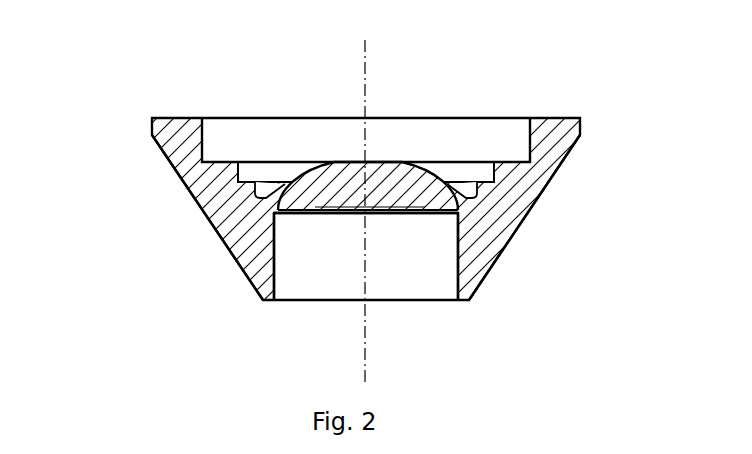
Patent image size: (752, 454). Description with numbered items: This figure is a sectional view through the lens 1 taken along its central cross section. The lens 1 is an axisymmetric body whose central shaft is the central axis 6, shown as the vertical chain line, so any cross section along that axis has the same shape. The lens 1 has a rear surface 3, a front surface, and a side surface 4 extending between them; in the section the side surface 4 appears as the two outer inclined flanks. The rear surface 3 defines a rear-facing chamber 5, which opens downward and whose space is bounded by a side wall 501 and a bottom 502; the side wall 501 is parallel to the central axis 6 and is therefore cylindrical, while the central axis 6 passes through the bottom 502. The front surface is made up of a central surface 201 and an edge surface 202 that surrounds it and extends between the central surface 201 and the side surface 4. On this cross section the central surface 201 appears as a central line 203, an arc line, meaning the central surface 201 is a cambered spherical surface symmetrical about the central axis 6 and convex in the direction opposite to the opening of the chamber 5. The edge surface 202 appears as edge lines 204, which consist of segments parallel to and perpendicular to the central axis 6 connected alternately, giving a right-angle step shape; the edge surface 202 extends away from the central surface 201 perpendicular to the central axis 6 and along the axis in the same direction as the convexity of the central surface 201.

The lens 1 is at (233, 292).
The rear surface 3 is at (203, 216).
The side surface 4 is at (170, 167).
The chamber 5 is at (425, 285).
The side wall 501 is at (276, 258).
The bottom 502 is at (344, 213).
The central axis 6 is at (364, 347).
The central surface 201 is at (355, 162).
The edge surface 202 is at (224, 162).
The central line 203 is at (410, 162).
The edge lines 204 is at (256, 193).